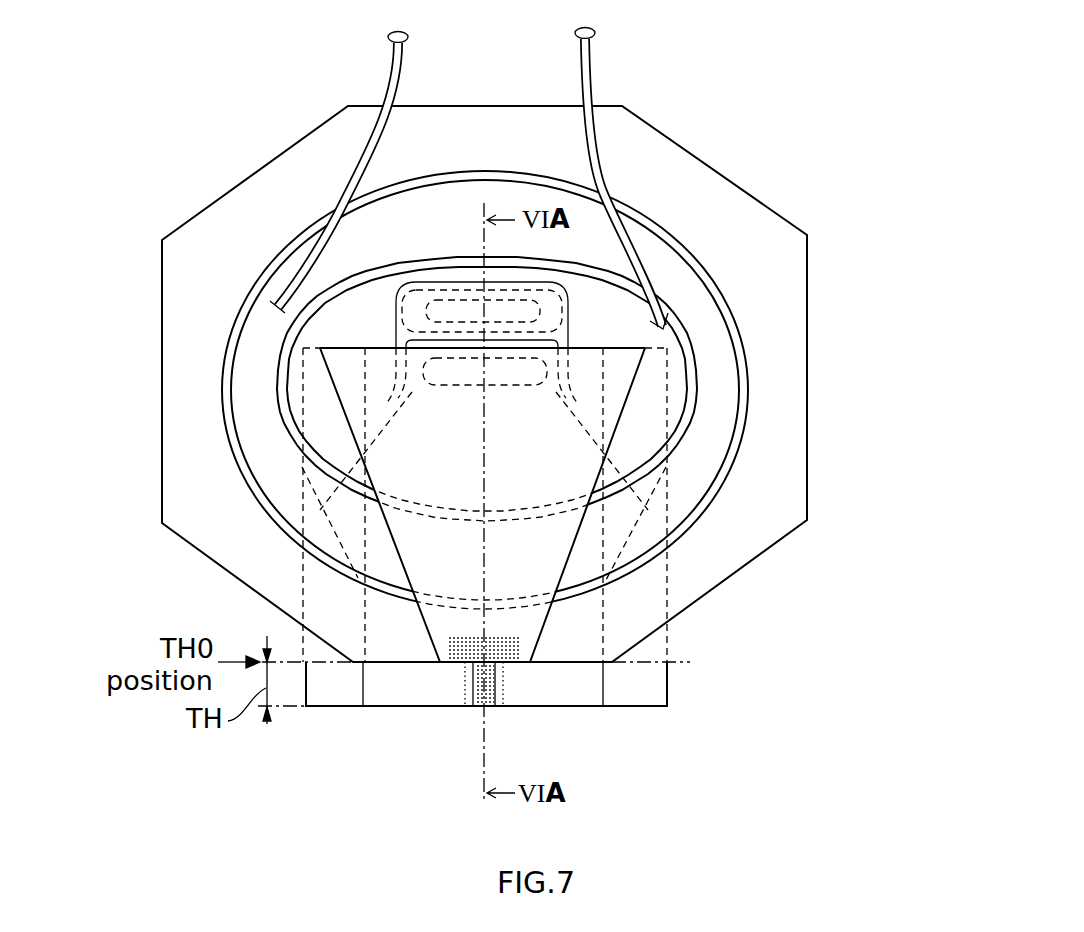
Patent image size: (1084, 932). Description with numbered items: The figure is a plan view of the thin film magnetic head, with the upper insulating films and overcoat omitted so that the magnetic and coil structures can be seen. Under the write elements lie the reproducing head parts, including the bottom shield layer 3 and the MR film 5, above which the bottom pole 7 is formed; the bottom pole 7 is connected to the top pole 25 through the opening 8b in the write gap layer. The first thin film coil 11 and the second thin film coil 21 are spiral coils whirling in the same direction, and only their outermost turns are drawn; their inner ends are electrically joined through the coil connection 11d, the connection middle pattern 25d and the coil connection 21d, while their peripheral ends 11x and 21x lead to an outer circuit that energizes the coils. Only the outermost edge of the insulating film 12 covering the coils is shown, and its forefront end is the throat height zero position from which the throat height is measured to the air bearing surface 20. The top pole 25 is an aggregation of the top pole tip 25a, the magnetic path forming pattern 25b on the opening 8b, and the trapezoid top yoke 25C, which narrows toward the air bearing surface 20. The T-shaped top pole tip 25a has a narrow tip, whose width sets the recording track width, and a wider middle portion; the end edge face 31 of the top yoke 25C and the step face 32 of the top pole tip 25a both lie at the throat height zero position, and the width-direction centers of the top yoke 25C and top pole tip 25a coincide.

The bottom shield layer 3 is at (306, 640).
The MR film 5 is at (465, 707).
The bottom pole 7 is at (320, 510).
The opening 8b is at (448, 385).
The thin film coil 11 is at (703, 267).
The coil connection 11d is at (563, 342).
The peripheral end 11x is at (388, 38).
The insulating film 12 is at (205, 212).
The air bearing surface 20 is at (320, 712).
The thin film coil 21 is at (688, 410).
The coil connection 21d is at (403, 333).
The peripheral end 21x is at (596, 33).
The top pole 25 is at (897, 542).
The top pole tip 25a is at (797, 652).
The magnetic path forming pattern 25b is at (497, 372).
The top yoke 25C is at (563, 528).
The connection middle pattern 25d is at (440, 298).
The end edge face 31 is at (444, 665).
The step face 32 is at (462, 666).